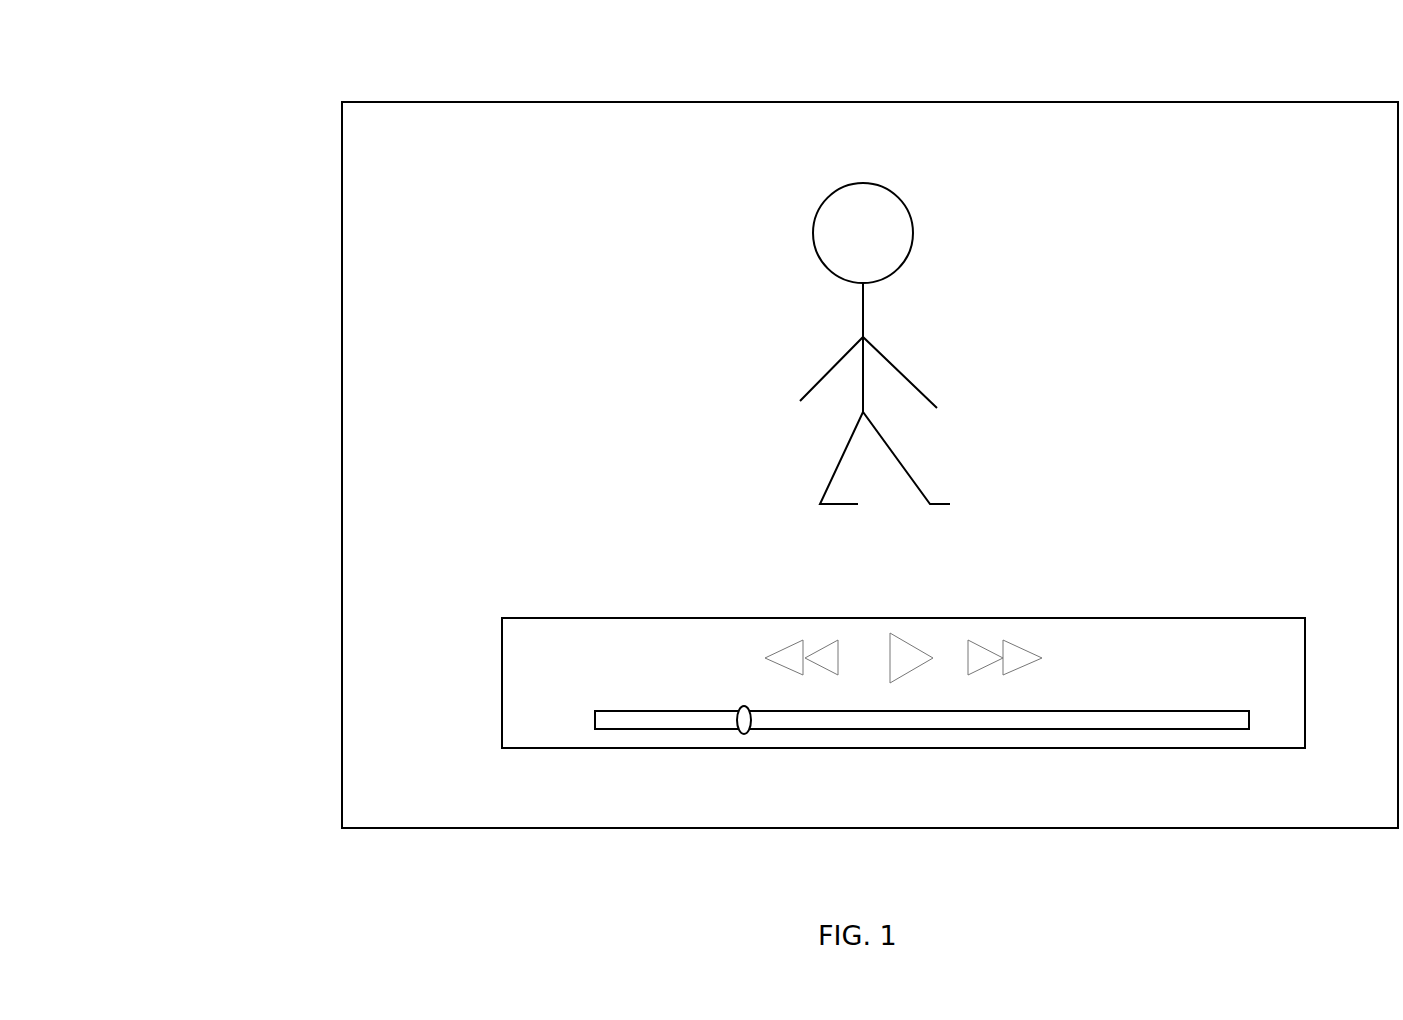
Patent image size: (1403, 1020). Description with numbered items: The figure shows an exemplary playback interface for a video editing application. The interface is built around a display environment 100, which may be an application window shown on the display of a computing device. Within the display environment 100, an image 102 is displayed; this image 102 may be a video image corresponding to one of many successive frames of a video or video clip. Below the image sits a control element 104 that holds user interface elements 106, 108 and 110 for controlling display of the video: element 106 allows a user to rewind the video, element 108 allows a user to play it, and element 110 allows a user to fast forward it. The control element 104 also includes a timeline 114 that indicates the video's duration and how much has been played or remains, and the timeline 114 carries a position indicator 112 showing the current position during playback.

The display environment 100 is at (310, 152).
The image 102 is at (684, 307).
The control element 104 is at (599, 598).
The user interface element 106 is at (822, 643).
The user interface element 108 is at (918, 643).
The user interface element 110 is at (997, 643).
The position indicator 112 is at (750, 740).
The timeline 114 is at (1256, 720).